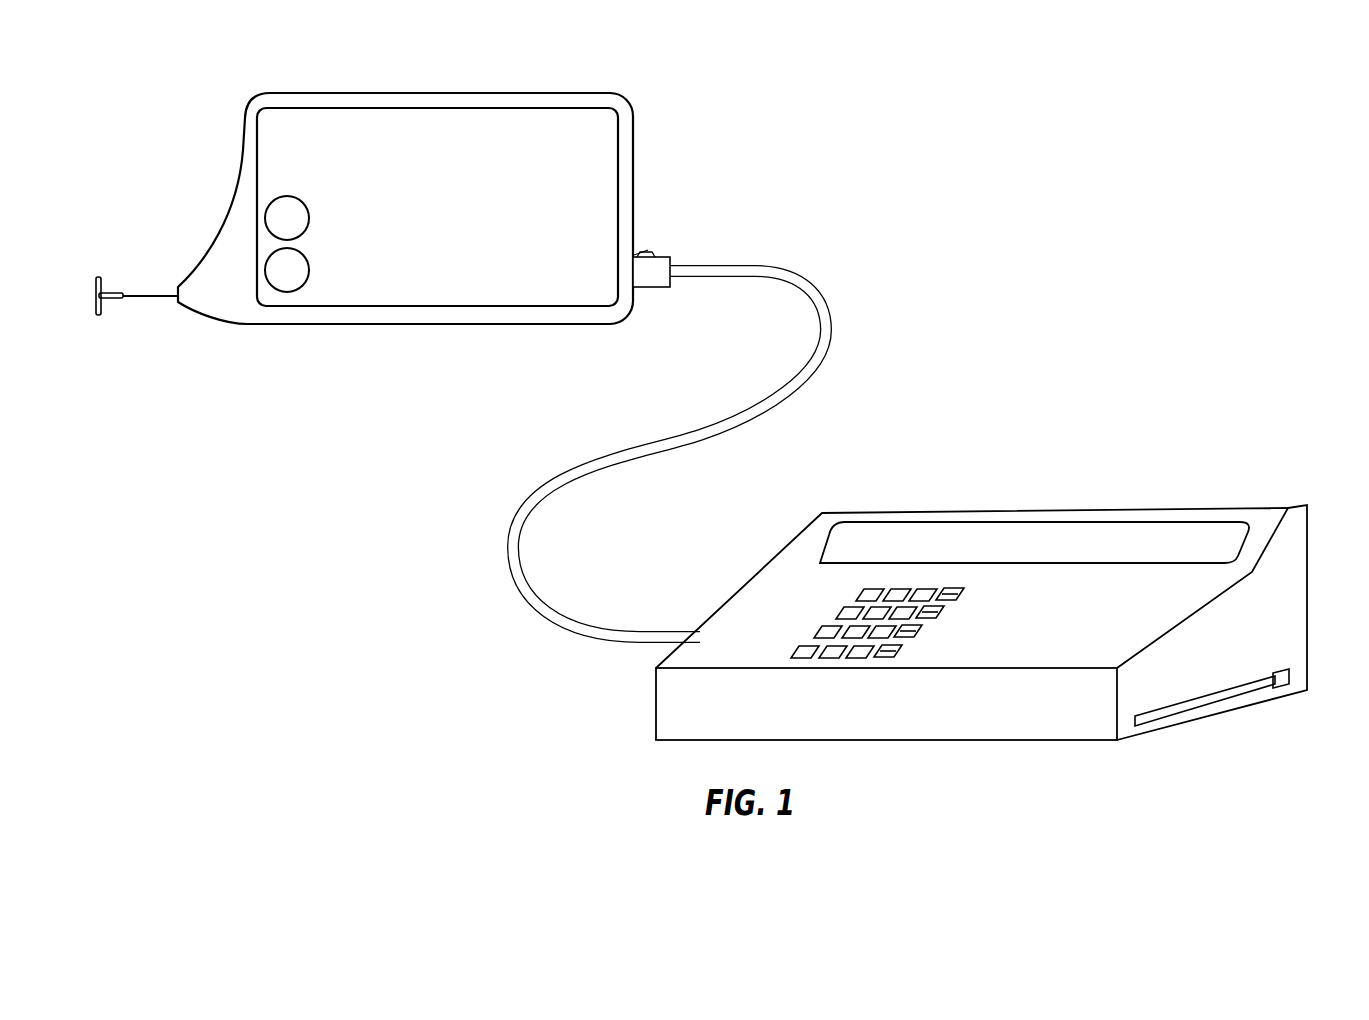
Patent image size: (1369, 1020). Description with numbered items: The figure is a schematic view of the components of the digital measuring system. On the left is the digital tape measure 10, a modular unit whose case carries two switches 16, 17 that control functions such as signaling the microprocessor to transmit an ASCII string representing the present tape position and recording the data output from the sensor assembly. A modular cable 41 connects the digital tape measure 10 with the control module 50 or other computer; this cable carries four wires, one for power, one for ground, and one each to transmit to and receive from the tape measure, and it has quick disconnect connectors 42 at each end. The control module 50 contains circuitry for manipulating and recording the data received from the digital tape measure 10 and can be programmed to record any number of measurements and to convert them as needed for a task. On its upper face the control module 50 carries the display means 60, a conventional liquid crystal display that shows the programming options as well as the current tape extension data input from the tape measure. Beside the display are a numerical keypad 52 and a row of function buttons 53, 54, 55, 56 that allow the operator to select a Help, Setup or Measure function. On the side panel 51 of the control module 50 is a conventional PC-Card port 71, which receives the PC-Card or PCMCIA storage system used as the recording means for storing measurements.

The digital tape measure 10 is at (408, 140).
The switch 16 is at (309, 218).
The switch 17 is at (309, 268).
The modular cable 41 is at (728, 265).
The quick disconnect connector 42 is at (655, 287).
The control module 50 is at (667, 710).
The side panel 51 is at (1297, 540).
The numerical keypad 52 is at (808, 613).
The function button 53 is at (963, 597).
The function button 54 is at (944, 615).
The function button 55 is at (922, 633).
The function button 56 is at (900, 655).
The display means 60 is at (1098, 535).
The PC-Card port 71 is at (1260, 680).